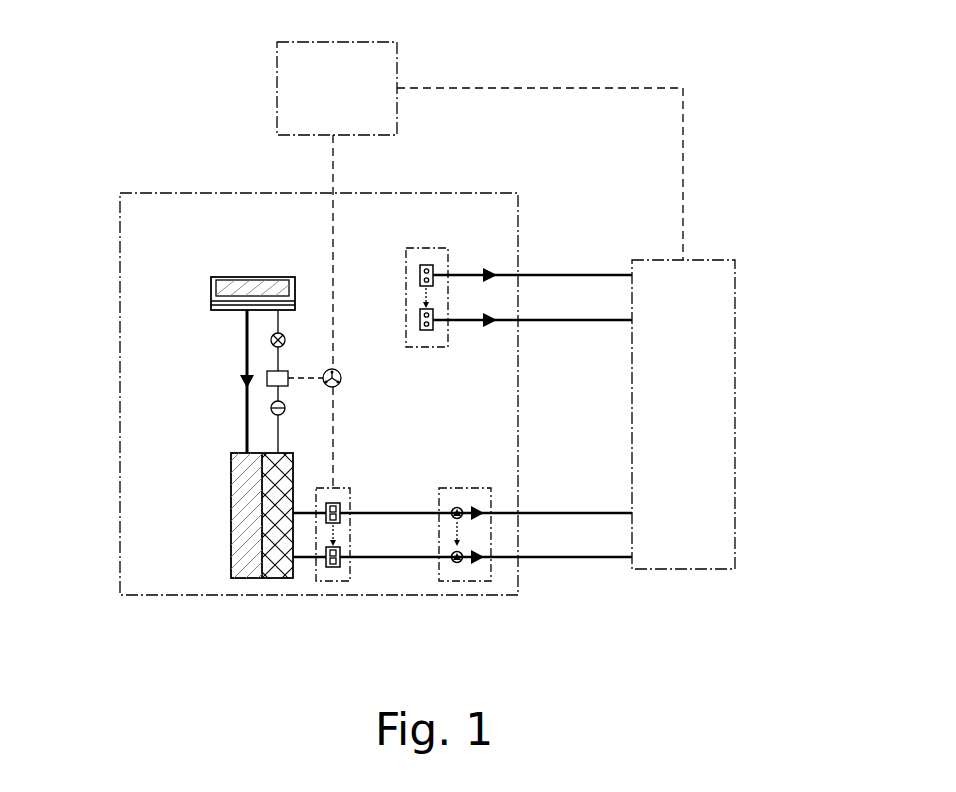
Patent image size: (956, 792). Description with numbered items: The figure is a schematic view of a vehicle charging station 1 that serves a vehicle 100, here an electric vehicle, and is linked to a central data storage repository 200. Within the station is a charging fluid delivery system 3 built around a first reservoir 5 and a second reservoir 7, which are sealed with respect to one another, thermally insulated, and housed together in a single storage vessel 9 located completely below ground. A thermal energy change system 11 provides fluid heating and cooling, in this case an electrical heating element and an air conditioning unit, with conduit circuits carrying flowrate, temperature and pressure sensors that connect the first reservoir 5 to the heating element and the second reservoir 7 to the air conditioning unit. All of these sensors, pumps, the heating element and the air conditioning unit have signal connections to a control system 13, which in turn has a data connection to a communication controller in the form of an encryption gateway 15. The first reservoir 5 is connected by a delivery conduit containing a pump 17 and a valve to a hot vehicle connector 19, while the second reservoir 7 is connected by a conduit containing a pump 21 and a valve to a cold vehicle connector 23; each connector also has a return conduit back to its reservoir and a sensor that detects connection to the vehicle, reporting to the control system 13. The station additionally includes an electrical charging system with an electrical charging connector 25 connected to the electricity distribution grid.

The vehicle charging station 1 is at (225, 193).
The charging fluid delivery system 3 is at (162, 342).
The first reservoir 5 is at (253, 553).
The second reservoir 7 is at (277, 558).
The storage vessel 9 is at (243, 538).
The thermal energy change system 11 is at (228, 277).
The control system 13 is at (267, 386).
The encryption gateway 15 is at (340, 370).
The pump 17 is at (457, 563).
The hot vehicle connector 19 is at (372, 583).
The pump 21 is at (500, 580).
The cold vehicle connector 23 is at (340, 518).
The electrical charging connector 25 is at (430, 293).
The vehicle 100 is at (732, 310).
The central data storage repository 200 is at (290, 70).